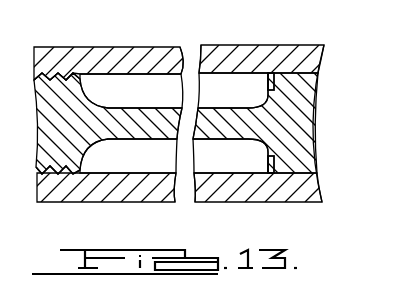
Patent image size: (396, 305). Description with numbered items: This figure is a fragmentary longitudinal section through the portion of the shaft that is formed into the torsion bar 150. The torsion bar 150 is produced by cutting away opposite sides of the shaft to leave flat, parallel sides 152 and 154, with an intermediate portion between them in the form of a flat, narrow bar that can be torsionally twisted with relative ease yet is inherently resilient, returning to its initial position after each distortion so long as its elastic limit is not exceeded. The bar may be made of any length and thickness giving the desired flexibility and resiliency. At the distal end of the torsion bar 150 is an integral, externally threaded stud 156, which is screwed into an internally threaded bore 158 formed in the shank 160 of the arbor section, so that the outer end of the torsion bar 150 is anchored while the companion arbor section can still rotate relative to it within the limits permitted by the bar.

The torsion bar 150 is at (209, 110).
The flat parallel side 152 is at (158, 104).
The flat parallel side 154 is at (115, 145).
The externally threaded stud 156 is at (45, 76).
The internally threaded bore 158 is at (50, 202).
The shank 160 is at (125, 51).